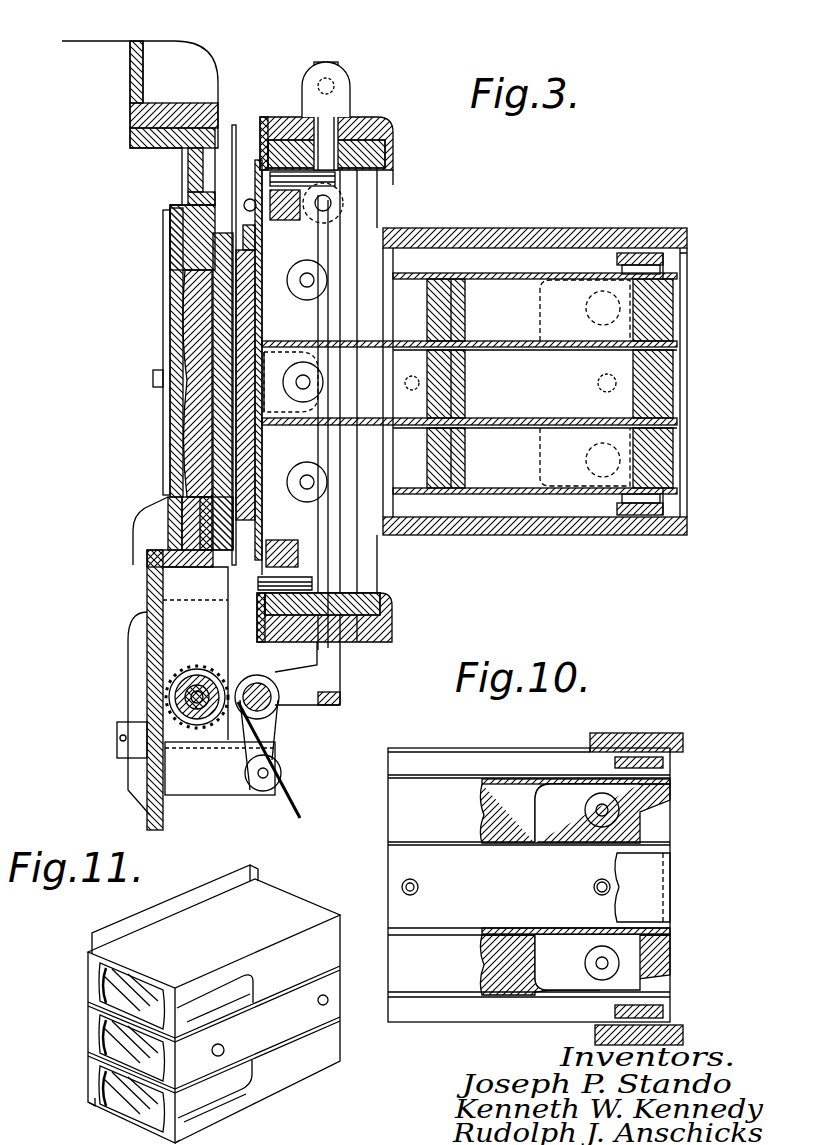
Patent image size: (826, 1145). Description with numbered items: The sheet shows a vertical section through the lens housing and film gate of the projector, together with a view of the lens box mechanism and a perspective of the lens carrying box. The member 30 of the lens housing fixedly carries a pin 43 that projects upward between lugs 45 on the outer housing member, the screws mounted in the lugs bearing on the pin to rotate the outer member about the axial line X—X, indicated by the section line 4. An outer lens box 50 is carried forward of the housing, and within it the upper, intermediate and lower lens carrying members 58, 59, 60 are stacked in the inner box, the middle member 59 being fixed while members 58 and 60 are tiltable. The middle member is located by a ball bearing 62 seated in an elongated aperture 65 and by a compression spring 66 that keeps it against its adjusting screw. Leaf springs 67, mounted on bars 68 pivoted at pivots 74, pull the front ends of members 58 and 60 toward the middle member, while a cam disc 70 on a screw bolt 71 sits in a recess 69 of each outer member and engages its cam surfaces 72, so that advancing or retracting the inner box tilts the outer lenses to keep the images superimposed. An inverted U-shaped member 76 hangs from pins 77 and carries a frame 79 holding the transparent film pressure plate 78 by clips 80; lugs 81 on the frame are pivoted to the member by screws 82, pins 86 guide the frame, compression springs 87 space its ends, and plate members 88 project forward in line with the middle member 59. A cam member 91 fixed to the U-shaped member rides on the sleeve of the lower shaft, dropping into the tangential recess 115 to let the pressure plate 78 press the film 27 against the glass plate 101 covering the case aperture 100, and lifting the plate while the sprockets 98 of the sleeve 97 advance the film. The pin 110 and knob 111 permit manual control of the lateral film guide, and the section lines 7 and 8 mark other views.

In FIG. 3, the section line 4- 4 is at (75, 378).
In FIG. 3, the section line 7- 7 is at (240, 50).
In FIG. 3, the section line 8- 8 is at (700, 457).
In FIG. 3, the film 27 is at (290, 790).
In FIG. 3, the member 30 is at (382, 152).
In FIG. 3, the pin 43 is at (332, 100).
In FIG. 3, the lugs 45 is at (340, 72).
In FIG. 3, the outer lens box 50 is at (520, 232).
In FIG. 3, the upper lens carrying member 58 is at (498, 278).
In FIG. 11, the upper lens carrying member 58 is at (90, 982).
In FIG. 3, the intermediate lens carrying member 59 is at (502, 420).
In FIG. 11, the intermediate lens carrying member 59 is at (90, 1022).
In FIG. 3, the lower lens carrying member 60 is at (476, 494).
In FIG. 11, the lower lens carrying member 60 is at (92, 1078).
In FIG. 10, the ball bearing 62 is at (388, 903).
In FIG. 10, the aperture 65 is at (418, 884).
In FIG. 3, the compression spring 66 is at (600, 380).
In FIG. 3, the leaf springs 67 is at (668, 270).
In FIG. 3, the bars 68 is at (662, 258).
In FIG. 10, the bars 68 is at (664, 762).
In FIG. 10, the recess 69 is at (555, 990).
In FIG. 11, the recess 69 is at (232, 982).
In FIG. 3, the cam disc 70 is at (590, 320).
In FIG. 10, the cam disc 70 is at (612, 822).
In FIG. 10, the screw bolt 71 is at (608, 810).
In FIG. 3, the cam surfaces 72 is at (585, 465).
In FIG. 10, the cam surfaces 72 is at (572, 796).
In FIG. 11, the cam surfaces 72 is at (218, 984).
In FIG. 3, the pivots 74 is at (655, 238).
In FIG. 10, the pivots 74 is at (642, 734).
In FIG. 3, the inverted U-shaped member 76 is at (345, 548).
In FIG. 3, the pins 77 is at (332, 205).
In FIG. 3, the transparent film pressure plate 78 is at (300, 278).
In FIG. 3, the frame 79 is at (300, 484).
In FIG. 3, the clips 80 is at (257, 188).
In FIG. 3, the lugs 81 is at (278, 368).
In FIG. 3, the screws 82 is at (300, 384).
In FIG. 3, the pins 86 is at (233, 140).
In FIG. 3, the compression springs 87 is at (284, 222).
In FIG. 3, the plate members 88 is at (288, 341).
In FIG. 3, the cam member 91 is at (300, 702).
In FIG. 3, the sleeve 97 is at (185, 698).
In FIG. 3, the sprockets 98 is at (182, 660).
In FIG. 3, the aperture 100 is at (176, 268).
In FIG. 3, the transparent glass plate 101 is at (200, 322).
In FIG. 3, the pin 110 is at (370, 120).
In FIG. 3, the knob 111 is at (256, 176).
In FIG. 3, the tangential recess 115 is at (205, 668).